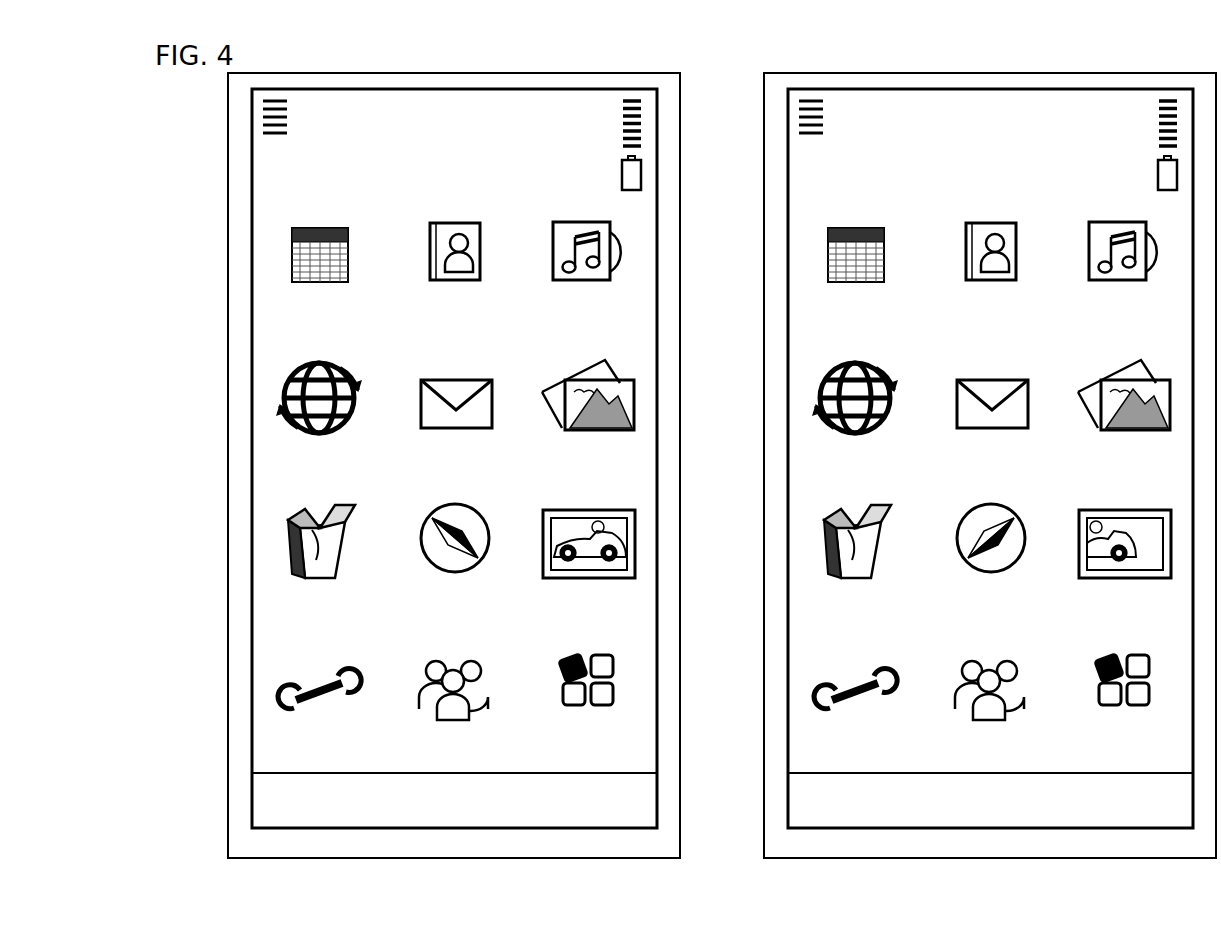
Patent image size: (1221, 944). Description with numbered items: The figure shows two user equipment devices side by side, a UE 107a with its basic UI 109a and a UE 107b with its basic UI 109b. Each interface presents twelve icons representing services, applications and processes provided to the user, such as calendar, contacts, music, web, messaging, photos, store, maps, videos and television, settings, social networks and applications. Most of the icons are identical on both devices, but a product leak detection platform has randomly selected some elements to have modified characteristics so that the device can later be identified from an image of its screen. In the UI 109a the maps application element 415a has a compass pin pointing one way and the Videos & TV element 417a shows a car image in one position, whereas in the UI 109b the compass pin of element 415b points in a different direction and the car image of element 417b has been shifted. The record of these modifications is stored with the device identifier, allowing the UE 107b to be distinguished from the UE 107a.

The UE 107a is at (228, 466).
The UE 107b is at (763, 462).
The basic UI 109a is at (474, 152).
The basic UI 109b is at (990, 458).
The maps application element 415a is at (478, 490).
The maps application element 415b is at (994, 528).
The Videos & TV element 417a is at (587, 509).
The Videos & TV element 417b is at (1125, 535).